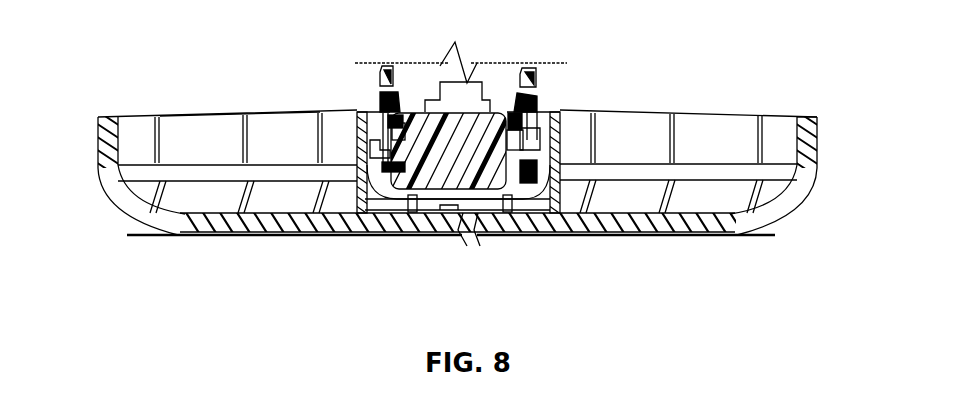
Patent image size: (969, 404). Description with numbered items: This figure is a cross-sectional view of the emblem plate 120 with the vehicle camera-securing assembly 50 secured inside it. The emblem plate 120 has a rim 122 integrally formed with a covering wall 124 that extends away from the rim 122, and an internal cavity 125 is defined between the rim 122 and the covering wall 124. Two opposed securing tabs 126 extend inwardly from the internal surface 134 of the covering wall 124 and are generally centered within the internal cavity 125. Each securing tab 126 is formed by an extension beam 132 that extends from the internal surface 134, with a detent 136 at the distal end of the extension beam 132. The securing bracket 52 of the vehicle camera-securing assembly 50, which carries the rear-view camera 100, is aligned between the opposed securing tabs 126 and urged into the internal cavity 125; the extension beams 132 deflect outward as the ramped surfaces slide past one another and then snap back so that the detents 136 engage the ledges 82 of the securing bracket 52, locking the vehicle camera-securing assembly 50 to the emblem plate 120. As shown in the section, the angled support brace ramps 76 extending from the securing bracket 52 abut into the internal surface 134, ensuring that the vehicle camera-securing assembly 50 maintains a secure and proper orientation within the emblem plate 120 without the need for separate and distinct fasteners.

The emblem plate 120 is at (100, 117).
The rim 122 is at (808, 118).
The covering wall 124 is at (163, 116).
The internal cavity 125 is at (256, 108).
The securing tab 126 is at (370, 147).
The extension beam 132 is at (357, 198).
The internal surface 134 is at (313, 220).
The detent 136 is at (373, 139).
The ledge 82 is at (373, 131).
The rear-view camera 100 is at (448, 112).
The vehicle camera-securing assembly 50 is at (480, 165).
The securing bracket 52 is at (441, 211).
The support brace ramp 76 is at (408, 201).